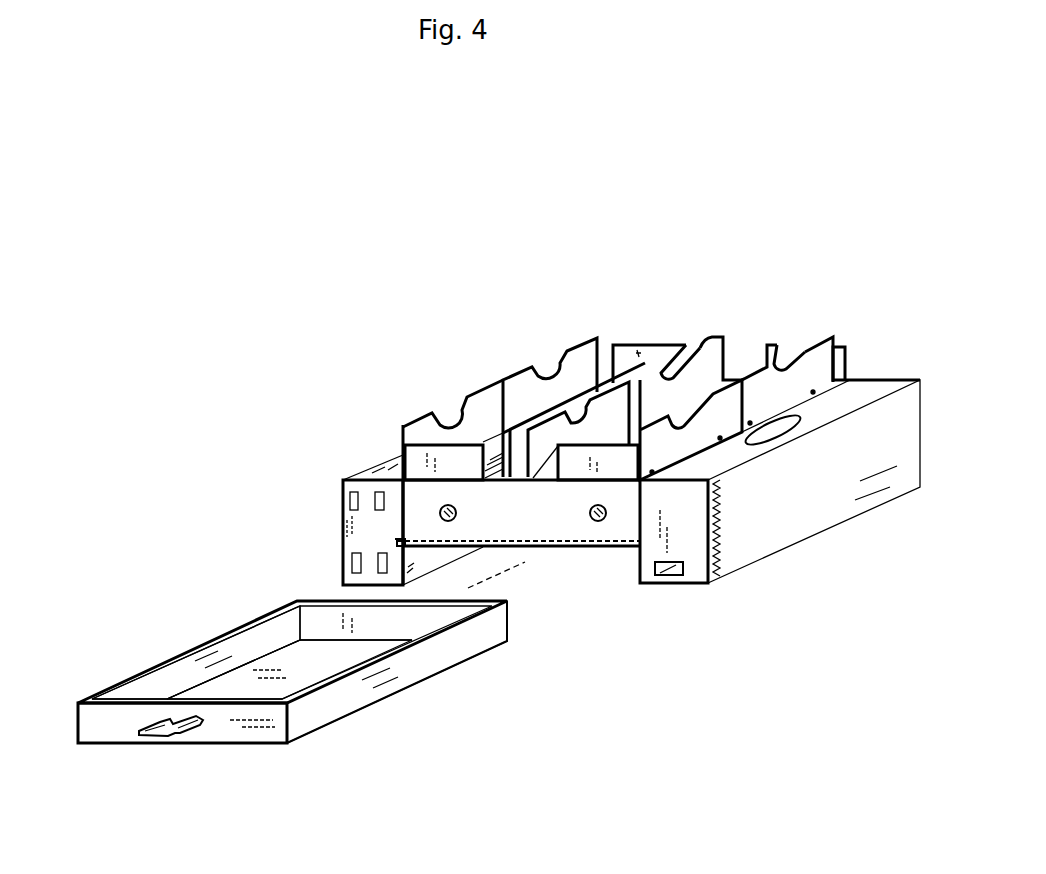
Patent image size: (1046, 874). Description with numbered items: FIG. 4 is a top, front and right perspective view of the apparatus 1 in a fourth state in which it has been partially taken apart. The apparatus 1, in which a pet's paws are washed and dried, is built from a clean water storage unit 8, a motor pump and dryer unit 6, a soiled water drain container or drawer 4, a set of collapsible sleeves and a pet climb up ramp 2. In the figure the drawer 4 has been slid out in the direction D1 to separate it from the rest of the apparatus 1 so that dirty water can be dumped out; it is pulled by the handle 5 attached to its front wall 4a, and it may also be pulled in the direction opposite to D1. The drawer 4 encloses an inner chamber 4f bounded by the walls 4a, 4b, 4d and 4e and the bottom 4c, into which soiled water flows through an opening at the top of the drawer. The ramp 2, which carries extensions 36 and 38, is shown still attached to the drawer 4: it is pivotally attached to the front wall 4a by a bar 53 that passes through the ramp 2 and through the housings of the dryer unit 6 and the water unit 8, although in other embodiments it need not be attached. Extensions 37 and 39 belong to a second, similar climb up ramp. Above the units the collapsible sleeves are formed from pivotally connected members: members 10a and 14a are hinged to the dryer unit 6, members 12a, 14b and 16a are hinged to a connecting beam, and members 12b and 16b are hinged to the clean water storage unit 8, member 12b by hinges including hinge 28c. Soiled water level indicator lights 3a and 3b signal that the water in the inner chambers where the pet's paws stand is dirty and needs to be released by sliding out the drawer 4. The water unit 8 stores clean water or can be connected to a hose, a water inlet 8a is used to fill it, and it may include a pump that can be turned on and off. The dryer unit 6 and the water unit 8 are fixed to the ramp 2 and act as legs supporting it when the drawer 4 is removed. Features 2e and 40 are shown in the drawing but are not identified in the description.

The apparatus 1 is at (720, 322).
The pet climb up ramp 2 is at (491, 529).
The rear wall of base 2e is at (850, 357).
The soiled water level indicator light 3a is at (443, 508).
The soiled water level indicator light 3b is at (602, 507).
The soiled water drain container or drawer 4 is at (292, 698).
The front wall 4a is at (276, 737).
The wall 4b is at (390, 629).
The bottom 4c is at (323, 674).
The wall 4d is at (350, 711).
The wall 4e is at (278, 647).
The inner chamber 4f is at (218, 688).
The handle 5 is at (157, 737).
The motor pump and dryer unit 6 is at (375, 534).
The clean water storage unit 8 is at (775, 522).
The water inlet 8a is at (775, 433).
The sleeve or member 10a is at (546, 398).
The sleeve or member 12a is at (688, 398).
The sleeve or member 12b is at (806, 401).
The sleeve or member 14a is at (497, 424).
The sleeve or member 14b is at (508, 440).
The sleeve or member 16a is at (624, 427).
The sleeve or member 16b is at (686, 452).
The hinge 28c is at (817, 392).
The extension 36 is at (472, 472).
The extension 37 is at (653, 350).
The extension 38 is at (586, 472).
The extension 39 is at (792, 357).
The tab 40 is at (668, 577).
The bar 53 is at (427, 547).
The direction D1 is at (237, 525).